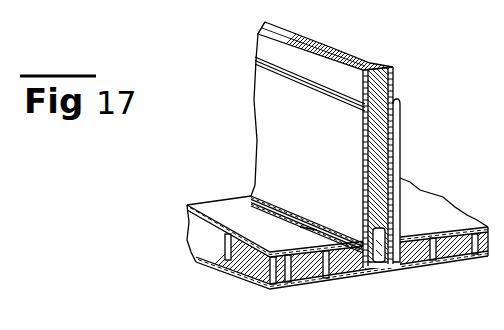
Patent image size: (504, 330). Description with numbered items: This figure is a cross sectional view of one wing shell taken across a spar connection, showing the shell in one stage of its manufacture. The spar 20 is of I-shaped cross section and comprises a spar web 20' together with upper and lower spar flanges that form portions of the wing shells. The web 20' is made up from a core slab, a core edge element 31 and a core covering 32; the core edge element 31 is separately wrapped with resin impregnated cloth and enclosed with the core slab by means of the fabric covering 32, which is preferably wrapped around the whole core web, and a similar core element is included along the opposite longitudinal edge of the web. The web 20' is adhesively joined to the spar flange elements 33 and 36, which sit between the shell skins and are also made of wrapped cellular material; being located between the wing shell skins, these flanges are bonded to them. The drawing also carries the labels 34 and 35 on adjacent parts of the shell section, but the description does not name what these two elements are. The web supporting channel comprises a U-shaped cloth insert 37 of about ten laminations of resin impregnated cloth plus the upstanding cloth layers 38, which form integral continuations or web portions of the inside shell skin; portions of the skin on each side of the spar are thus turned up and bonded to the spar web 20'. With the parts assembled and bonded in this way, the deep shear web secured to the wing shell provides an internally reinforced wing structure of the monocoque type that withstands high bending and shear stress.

The main spar 20 is at (338, 151).
The spar web 20' is at (410, 165).
The core edge element 31 is at (374, 270).
The core covering 32 is at (356, 64).
The spar flange element 33 is at (298, 280).
The floor core 34 is at (338, 278).
The floor top skin 35 is at (404, 262).
The spar flange element 36 is at (437, 258).
The U-shaped cloth insert 37 is at (400, 163).
The upstanding cloth layers 38 is at (400, 129).